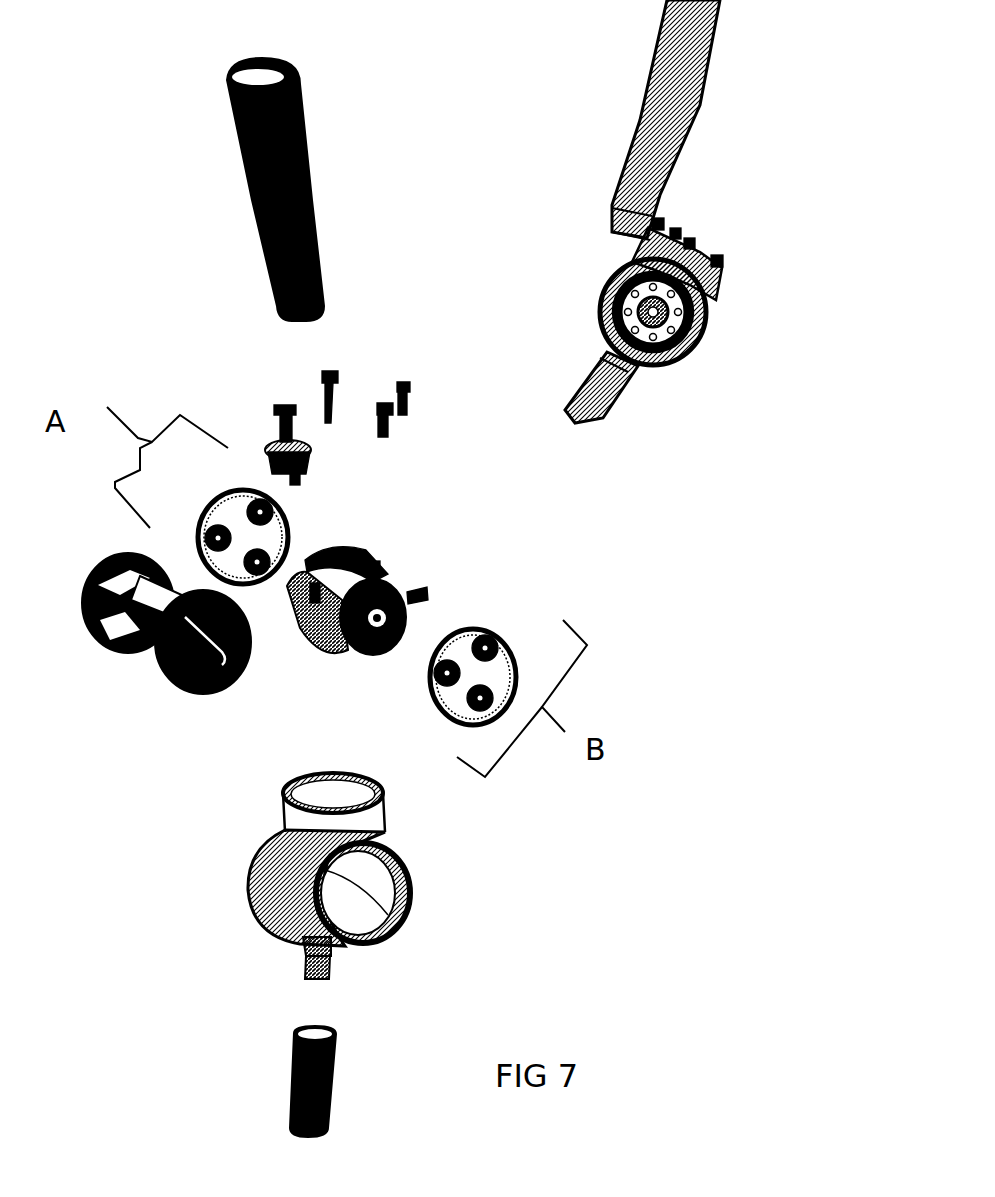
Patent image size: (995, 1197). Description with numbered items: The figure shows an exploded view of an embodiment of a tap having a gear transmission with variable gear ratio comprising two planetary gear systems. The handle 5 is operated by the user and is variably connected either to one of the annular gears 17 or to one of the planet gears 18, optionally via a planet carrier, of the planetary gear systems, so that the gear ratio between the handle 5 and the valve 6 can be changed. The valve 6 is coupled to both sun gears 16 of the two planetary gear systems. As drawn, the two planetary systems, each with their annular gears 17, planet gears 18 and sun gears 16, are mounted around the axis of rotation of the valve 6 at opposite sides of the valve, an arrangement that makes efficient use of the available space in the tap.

The handle 5 is at (308, 135).
The valve 6 is at (376, 556).
The sun gears 16 is at (403, 587).
The annular gears 17 is at (215, 508).
The planet gears 18 is at (458, 695).